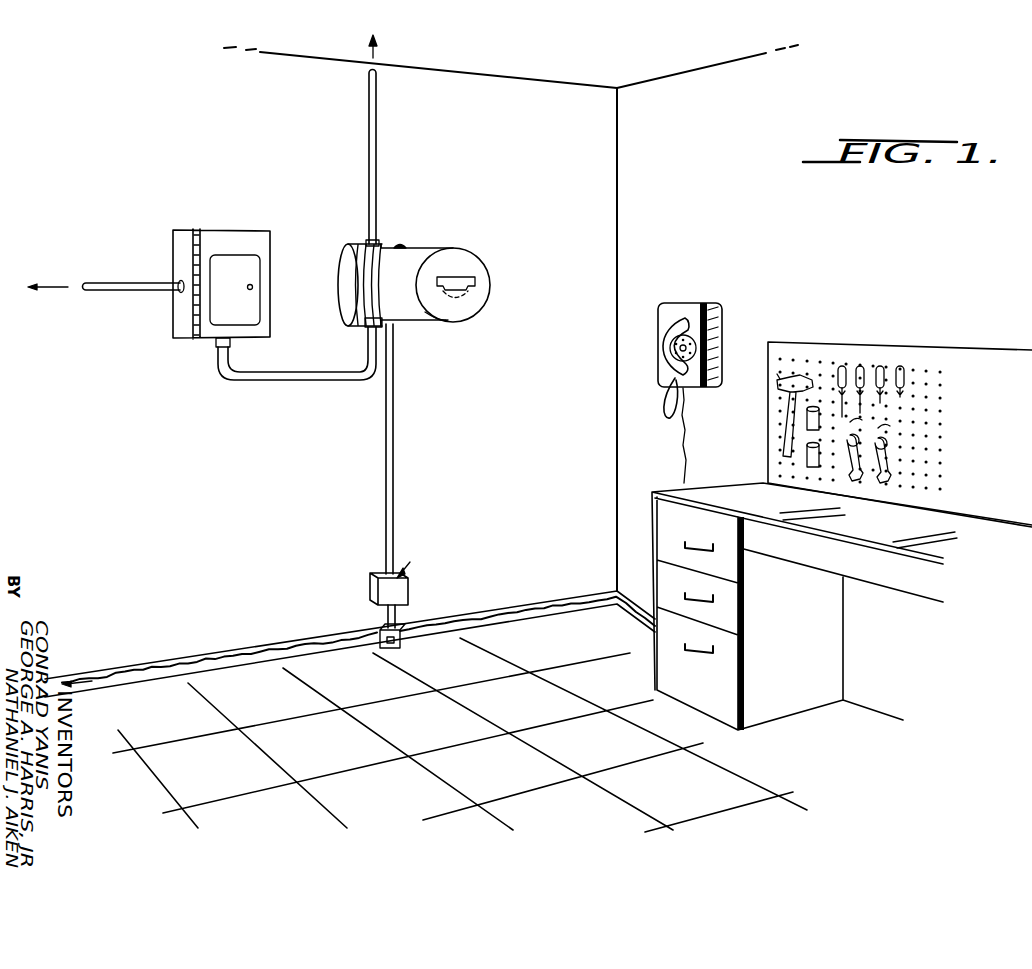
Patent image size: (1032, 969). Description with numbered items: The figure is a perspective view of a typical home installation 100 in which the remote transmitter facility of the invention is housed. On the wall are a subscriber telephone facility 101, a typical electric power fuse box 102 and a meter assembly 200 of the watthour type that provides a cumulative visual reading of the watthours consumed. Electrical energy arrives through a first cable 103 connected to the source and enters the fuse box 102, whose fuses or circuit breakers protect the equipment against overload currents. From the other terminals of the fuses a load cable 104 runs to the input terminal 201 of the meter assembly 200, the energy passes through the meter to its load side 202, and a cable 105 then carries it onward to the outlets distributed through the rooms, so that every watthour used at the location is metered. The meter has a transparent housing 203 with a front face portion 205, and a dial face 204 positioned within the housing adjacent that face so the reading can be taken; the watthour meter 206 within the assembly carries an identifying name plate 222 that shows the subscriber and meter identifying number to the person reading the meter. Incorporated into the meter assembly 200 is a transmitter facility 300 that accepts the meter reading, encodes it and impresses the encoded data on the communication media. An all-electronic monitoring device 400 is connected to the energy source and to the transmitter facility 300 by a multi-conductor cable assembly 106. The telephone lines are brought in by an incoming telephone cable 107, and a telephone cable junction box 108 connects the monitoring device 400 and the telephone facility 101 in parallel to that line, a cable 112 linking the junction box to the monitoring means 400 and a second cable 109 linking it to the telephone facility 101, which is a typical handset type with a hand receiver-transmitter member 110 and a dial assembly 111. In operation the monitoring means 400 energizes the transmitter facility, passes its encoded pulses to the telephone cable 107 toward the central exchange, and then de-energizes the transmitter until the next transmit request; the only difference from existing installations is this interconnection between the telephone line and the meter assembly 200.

The home installation 100 is at (850, 756).
The subscriber telephone facility 101 is at (717, 347).
The electric power fuse box 102 is at (240, 234).
The first cable 103 is at (133, 282).
The load cable 104 is at (280, 380).
The cable 105 is at (369, 123).
The cable assembly 106 is at (386, 486).
The incoming telephone cable 107 is at (228, 658).
The telephone cable junction box 108 is at (397, 645).
The second cable 109 is at (494, 618).
The hand receiver-transmitter member 110 is at (667, 342).
The dial assembly 111 is at (692, 335).
The cable 112 is at (388, 617).
The meter assembly 200 is at (417, 287).
The input terminal 201 is at (366, 323).
The load side 202 is at (366, 243).
The transparent housing 203 is at (492, 256).
The dial face 204 is at (476, 280).
The face portion 205 is at (444, 308).
The watthour meter 206 is at (406, 244).
The identifying name plate 222 is at (464, 306).
The transmitter facility 300 is at (412, 296).
The monitoring device 400 is at (372, 589).